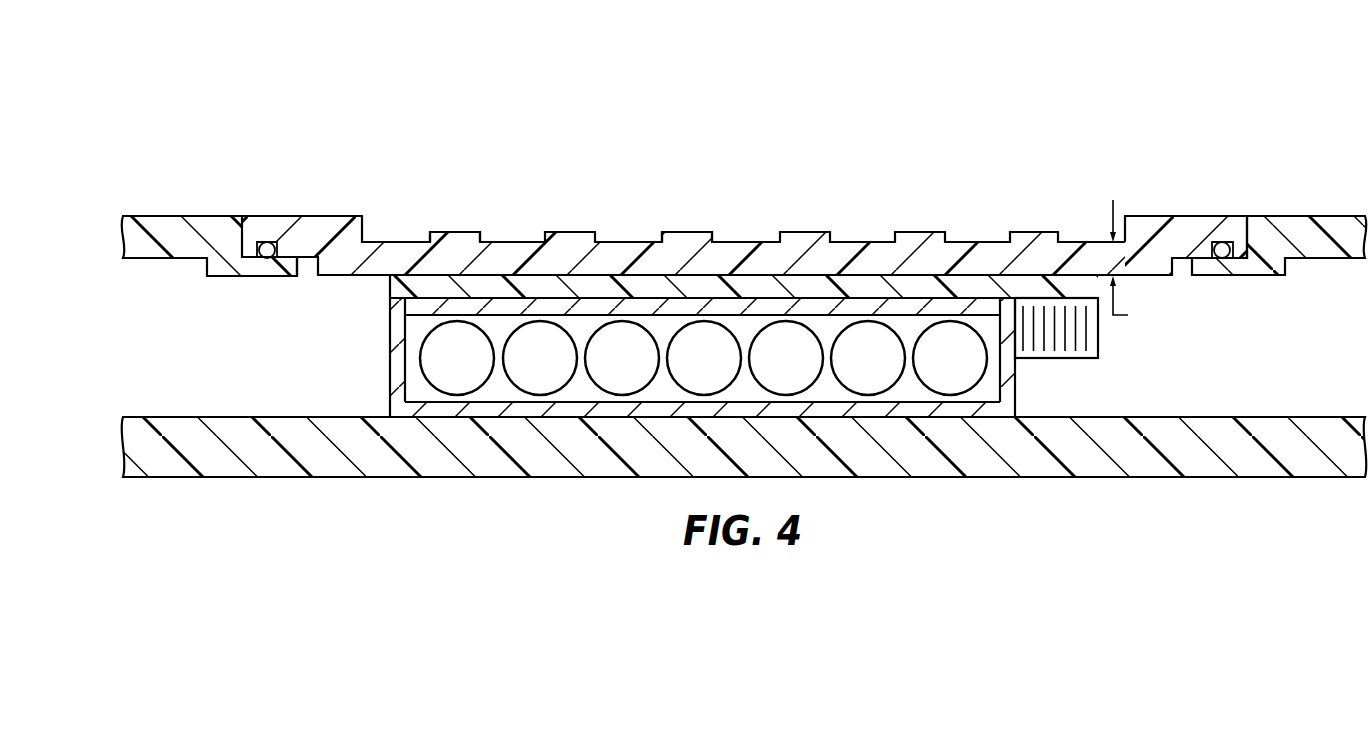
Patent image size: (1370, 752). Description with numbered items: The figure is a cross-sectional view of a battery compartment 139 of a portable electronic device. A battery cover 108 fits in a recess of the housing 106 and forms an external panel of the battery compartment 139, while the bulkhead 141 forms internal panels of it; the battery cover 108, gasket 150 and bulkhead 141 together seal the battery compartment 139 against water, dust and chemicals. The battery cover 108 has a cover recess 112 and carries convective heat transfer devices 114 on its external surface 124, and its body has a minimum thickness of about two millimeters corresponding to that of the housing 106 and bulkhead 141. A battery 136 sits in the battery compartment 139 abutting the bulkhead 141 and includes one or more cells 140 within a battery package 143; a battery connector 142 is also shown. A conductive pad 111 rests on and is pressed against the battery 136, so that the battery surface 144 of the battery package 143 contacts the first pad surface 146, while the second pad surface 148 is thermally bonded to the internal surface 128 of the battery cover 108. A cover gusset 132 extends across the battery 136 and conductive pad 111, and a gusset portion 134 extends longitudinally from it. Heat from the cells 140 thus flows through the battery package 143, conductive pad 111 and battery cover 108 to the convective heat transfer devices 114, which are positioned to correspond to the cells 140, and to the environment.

The battery cover 108 is at (580, 98).
The housing 106 is at (172, 215).
The cover recess 112 is at (383, 184).
The convective heat transfer devices 114 is at (449, 231).
The external surface 124 is at (1152, 215).
The gasket 150 is at (265, 258).
The battery package 143 is at (752, 298).
The second pad surface 148 is at (860, 298).
The battery surface 144 is at (977, 298).
The conductive pad 111 is at (1032, 287).
The battery 136 is at (649, 346).
The gusset portion 134 is at (378, 278).
The battery connector 142 is at (1098, 345).
The cell 140 is at (462, 376).
The cover gusset 132 is at (535, 278).
The internal surface 128 is at (693, 278).
The first pad surface 146 is at (848, 280).
The bulkhead 141 is at (285, 478).
The battery compartment 139 is at (135, 326).